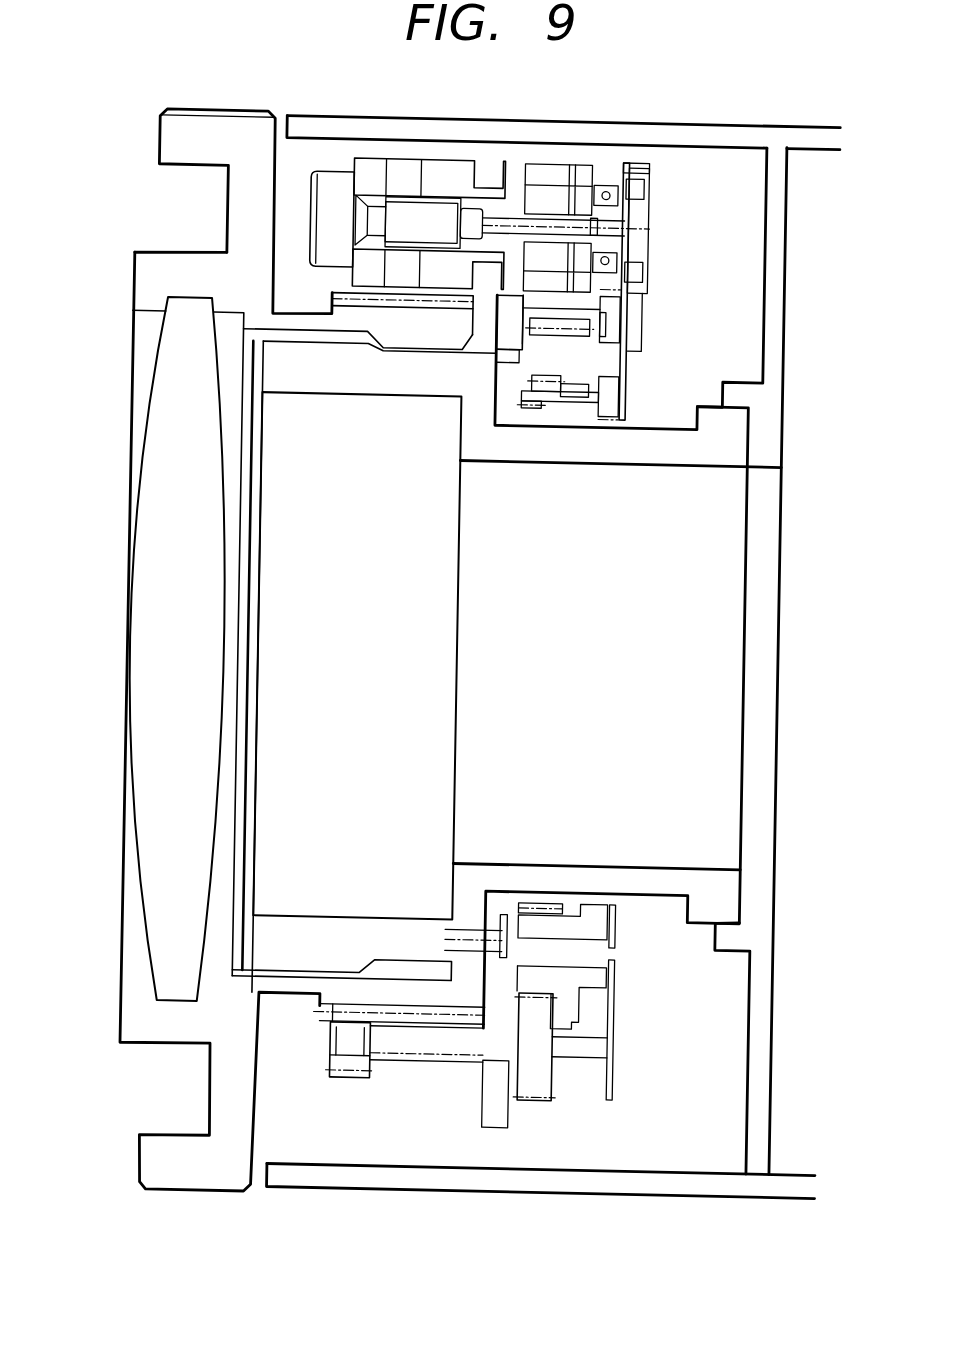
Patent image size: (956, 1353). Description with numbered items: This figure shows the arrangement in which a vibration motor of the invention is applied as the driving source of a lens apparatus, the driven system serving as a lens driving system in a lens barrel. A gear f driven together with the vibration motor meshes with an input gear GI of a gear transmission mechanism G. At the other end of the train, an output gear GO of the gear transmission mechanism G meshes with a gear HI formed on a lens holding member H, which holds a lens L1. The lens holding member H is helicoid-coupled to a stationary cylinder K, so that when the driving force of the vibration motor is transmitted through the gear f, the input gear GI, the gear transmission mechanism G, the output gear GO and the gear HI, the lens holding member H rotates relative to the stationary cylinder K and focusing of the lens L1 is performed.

The lens L1 is at (153, 838).
The stationary cylinder K is at (323, 937).
The gear transmission mechanism G is at (506, 247).
The input gear GI is at (606, 404).
The output gear GO is at (350, 1080).
The gear HI is at (326, 1024).
The lens holding member H is at (177, 1186).
The gear f is at (600, 160).